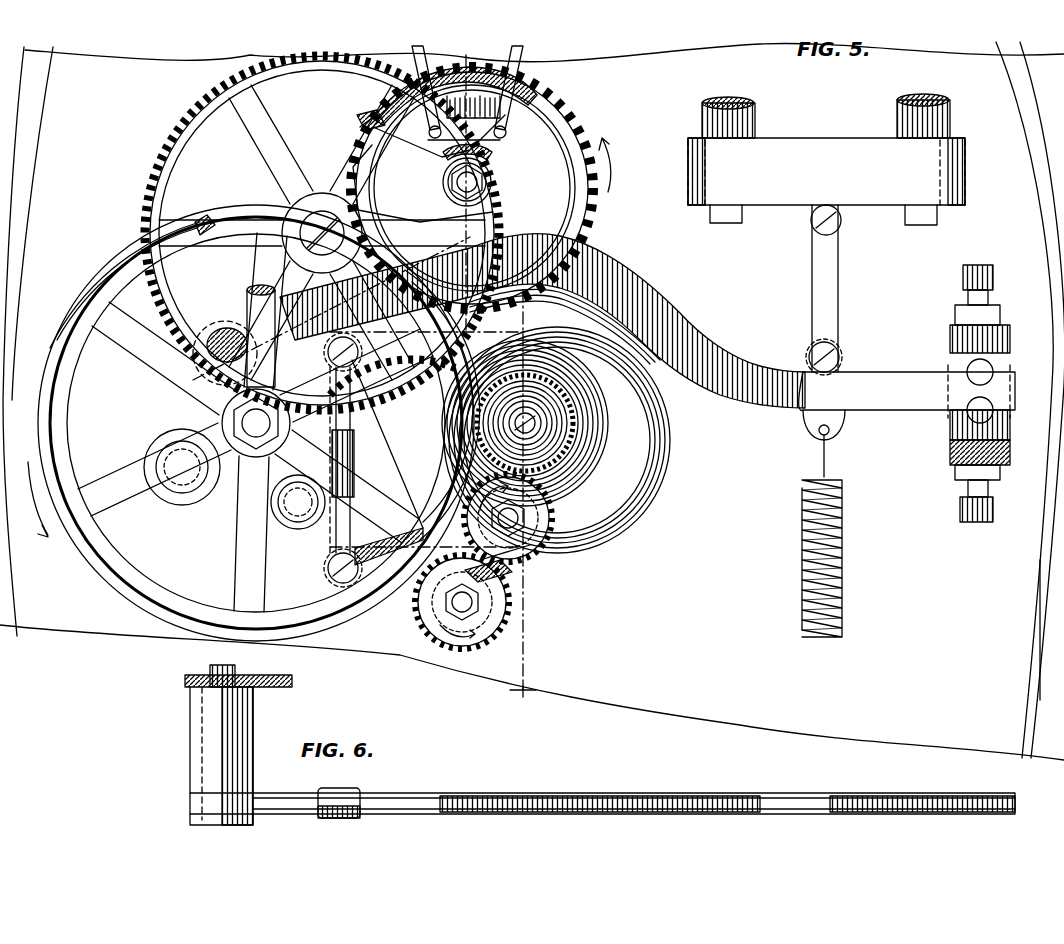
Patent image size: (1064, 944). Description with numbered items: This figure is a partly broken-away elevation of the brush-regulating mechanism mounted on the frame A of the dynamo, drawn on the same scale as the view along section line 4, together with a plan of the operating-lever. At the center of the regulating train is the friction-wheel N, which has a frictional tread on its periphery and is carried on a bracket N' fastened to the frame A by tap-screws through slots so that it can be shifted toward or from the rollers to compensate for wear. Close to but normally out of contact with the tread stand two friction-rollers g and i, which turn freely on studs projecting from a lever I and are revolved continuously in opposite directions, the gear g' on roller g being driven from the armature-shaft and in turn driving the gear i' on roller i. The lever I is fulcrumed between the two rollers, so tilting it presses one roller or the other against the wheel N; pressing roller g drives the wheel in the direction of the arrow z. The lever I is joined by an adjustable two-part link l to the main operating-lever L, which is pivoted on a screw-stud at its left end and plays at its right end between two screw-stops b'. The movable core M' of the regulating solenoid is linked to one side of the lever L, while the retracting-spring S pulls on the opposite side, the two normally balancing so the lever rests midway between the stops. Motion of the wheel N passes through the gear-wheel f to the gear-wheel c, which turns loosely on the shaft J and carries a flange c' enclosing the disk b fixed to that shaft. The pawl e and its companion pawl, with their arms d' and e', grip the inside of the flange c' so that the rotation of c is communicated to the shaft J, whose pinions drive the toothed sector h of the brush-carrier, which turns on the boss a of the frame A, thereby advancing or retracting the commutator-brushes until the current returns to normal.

In FIG. 5, the gear-wheel f is at (215, 140).
In FIG. 5, the friction-wheel N is at (256, 423).
In FIG. 5, the bracket N' is at (182, 480).
In FIG. 5, the arrow z is at (31, 499).
In FIG. 5, the main operating-lever L is at (542, 321).
In FIG. 6, the main operating-lever L is at (600, 745).
In FIG. 5, the section line 4 is at (492, 376).
In FIG. 5, the direction of rotation of escape wheel x' is at (491, 188).
In FIG. 5, the gear-wheel c is at (445, 144).
In FIG. 5, the flange c' is at (384, 98).
In FIG. 5, the shaft J is at (467, 176).
In FIG. 5, the arm of pawl d d' is at (417, 90).
In FIG. 5, the arm of pawl e e' is at (516, 90).
In FIG. 5, the boss a is at (445, 108).
In FIG. 5, the friction-pawl e is at (506, 110).
In FIG. 5, the disk b is at (464, 137).
In FIG. 5, the gear g' is at (557, 440).
In FIG. 5, the toothed sector h is at (525, 423).
In FIG. 5, the friction-roller g is at (508, 518).
In FIG. 5, the friction-roller i is at (462, 602).
In FIG. 5, the gear i' is at (504, 571).
In FIG. 5, the link l is at (343, 460).
In FIG. 5, the lever I is at (387, 462).
In FIG. 5, the movable core M' is at (826, 159).
In FIG. 5, the retracting-spring S is at (809, 536).
In FIG. 5, the screw-stops b' is at (985, 393).
In FIG. 5, the frame A is at (992, 630).